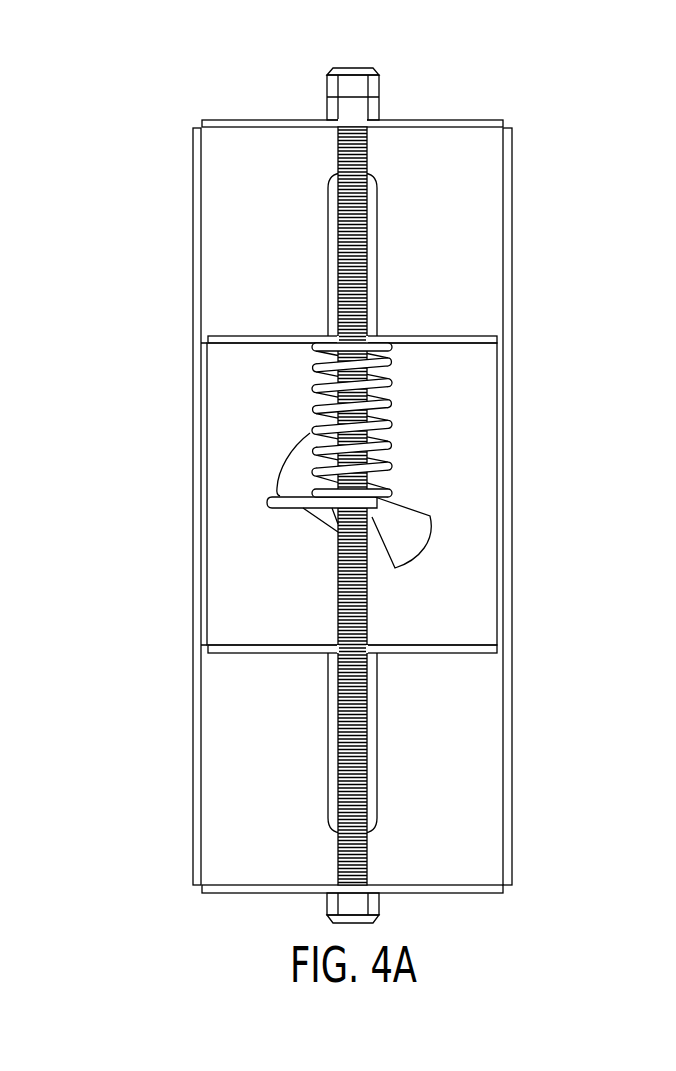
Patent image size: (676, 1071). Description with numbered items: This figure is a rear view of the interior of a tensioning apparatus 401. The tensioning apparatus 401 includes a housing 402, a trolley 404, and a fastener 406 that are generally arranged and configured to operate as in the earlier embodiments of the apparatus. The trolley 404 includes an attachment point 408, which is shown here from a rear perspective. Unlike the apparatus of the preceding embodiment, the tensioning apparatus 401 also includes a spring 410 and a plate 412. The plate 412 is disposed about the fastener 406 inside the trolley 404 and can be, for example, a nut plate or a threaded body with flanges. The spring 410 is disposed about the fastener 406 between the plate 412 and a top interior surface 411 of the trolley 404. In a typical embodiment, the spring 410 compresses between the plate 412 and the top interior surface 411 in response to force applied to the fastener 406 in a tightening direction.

The tensioning apparatus 401 is at (120, 145).
The housing 402 is at (484, 122).
The trolley 404 is at (452, 338).
The fastener 406 is at (362, 248).
The attachment point 408 is at (373, 513).
The spring 410 is at (370, 377).
The top interior surface 411 is at (475, 357).
The plate 412 is at (282, 503).